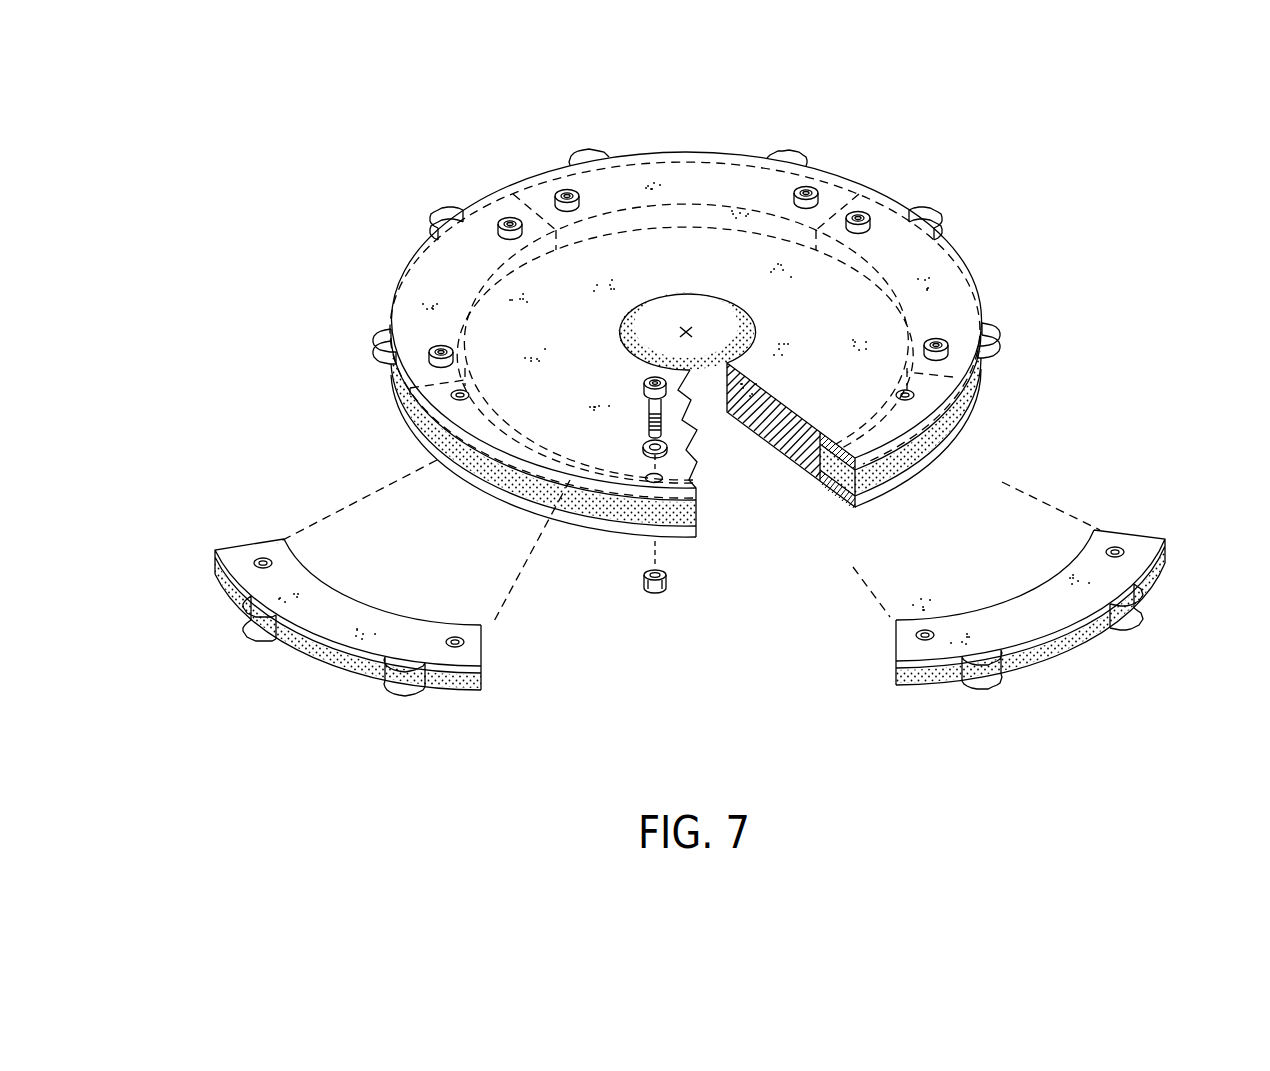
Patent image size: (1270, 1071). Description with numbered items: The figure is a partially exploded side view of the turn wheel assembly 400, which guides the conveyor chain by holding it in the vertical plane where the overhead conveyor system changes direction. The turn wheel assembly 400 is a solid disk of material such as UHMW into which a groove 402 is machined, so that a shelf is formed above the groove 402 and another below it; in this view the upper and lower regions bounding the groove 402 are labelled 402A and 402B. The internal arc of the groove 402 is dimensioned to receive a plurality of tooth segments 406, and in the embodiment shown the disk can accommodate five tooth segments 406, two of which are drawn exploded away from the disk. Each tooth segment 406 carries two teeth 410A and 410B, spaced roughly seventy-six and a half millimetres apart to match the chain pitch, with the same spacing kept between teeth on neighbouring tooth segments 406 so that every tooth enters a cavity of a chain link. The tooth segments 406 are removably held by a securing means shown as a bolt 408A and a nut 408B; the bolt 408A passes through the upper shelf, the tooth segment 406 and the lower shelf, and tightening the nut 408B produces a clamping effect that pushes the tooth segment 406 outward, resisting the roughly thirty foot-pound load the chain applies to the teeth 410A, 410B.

The turn wheel assembly 400 is at (641, 146).
The groove 402 is at (495, 474).
The upper layer of backing plate 402A is at (887, 450).
The lower layer of backing plate 402B is at (868, 493).
The tooth segment 406 is at (718, 166).
The bolt 408A is at (565, 192).
The nut 408B is at (672, 585).
The tooth 410A is at (435, 228).
The tooth 410B is at (592, 157).